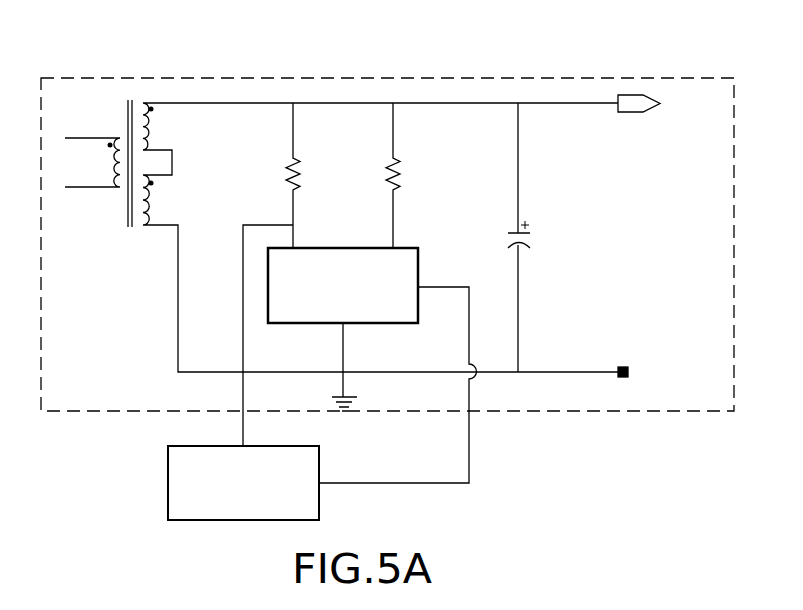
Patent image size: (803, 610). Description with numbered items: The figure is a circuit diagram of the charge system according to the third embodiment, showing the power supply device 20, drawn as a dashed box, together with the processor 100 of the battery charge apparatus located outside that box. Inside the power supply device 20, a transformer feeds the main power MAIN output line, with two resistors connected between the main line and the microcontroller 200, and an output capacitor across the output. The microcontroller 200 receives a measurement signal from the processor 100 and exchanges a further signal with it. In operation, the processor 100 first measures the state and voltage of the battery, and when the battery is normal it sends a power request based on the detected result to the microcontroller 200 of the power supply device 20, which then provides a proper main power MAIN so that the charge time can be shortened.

The power supply device 20 is at (165, 78).
The processor 100 is at (233, 453).
The microcontroller 200 is at (353, 318).